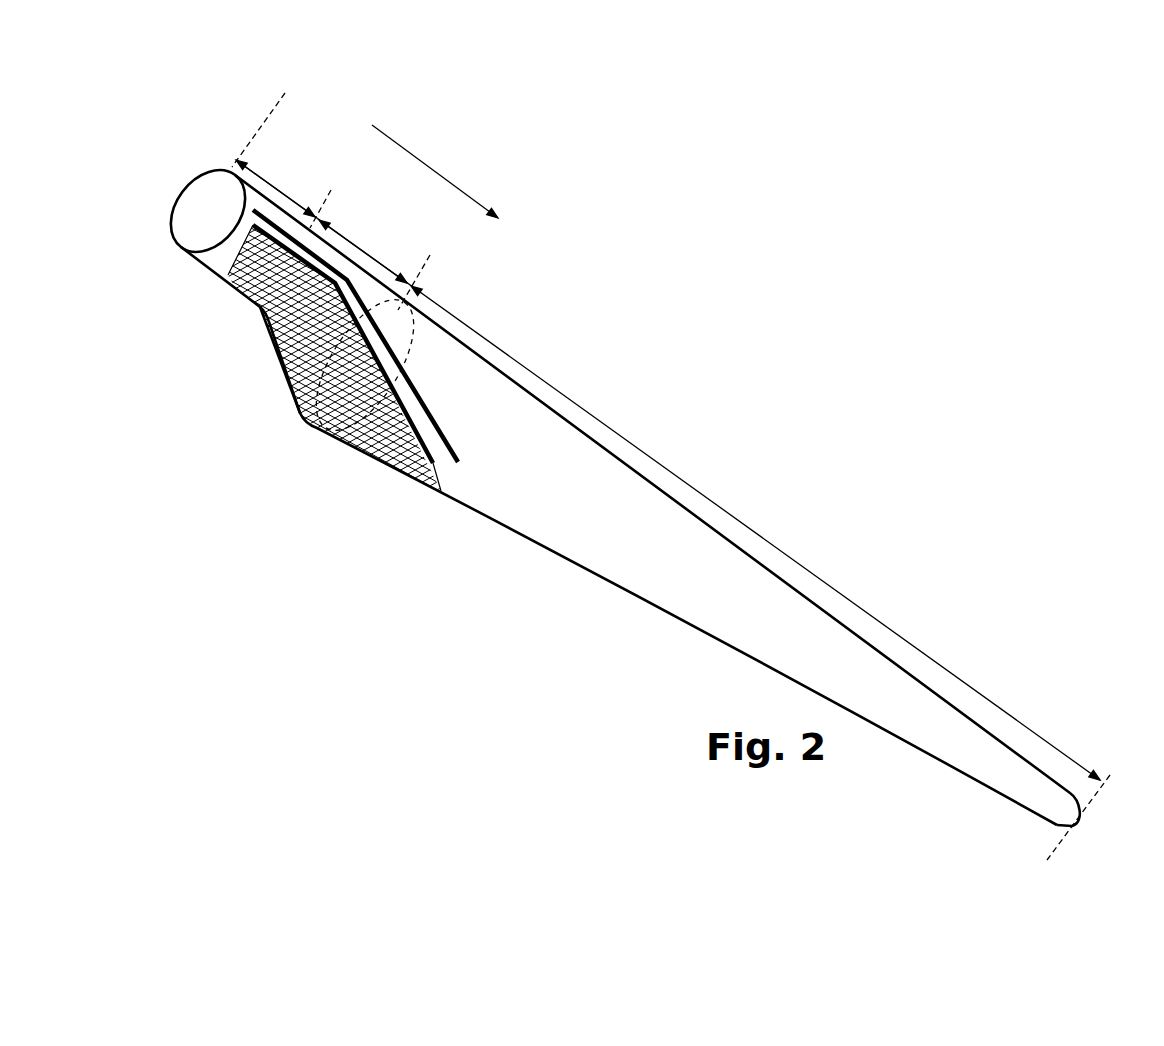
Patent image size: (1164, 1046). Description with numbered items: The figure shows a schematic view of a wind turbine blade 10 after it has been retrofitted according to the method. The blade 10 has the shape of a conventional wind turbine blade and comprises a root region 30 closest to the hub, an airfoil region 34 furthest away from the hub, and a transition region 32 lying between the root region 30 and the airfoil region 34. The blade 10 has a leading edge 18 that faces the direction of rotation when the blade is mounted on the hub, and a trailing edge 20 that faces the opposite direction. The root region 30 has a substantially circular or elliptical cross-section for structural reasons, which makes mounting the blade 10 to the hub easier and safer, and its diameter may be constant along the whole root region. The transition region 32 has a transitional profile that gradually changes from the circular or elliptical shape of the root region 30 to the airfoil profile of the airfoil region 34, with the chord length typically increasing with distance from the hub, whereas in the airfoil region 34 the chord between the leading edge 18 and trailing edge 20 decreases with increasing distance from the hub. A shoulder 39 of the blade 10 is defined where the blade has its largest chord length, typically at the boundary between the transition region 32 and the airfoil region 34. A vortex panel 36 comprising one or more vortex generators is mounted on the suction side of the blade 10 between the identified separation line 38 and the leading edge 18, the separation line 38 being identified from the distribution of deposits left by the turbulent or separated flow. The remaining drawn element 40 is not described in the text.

The wind turbine blade 10 is at (649, 458).
The leading edge 18 is at (608, 450).
The trailing edge 20 is at (547, 552).
The root region 30 is at (278, 176).
The transition region 32 is at (388, 252).
The airfoil region 34 is at (723, 507).
The vortex panel 36 is at (428, 298).
The separation line 38 is at (352, 440).
The shoulder 39 is at (276, 347).
The reinforcement strip 40 is at (338, 275).